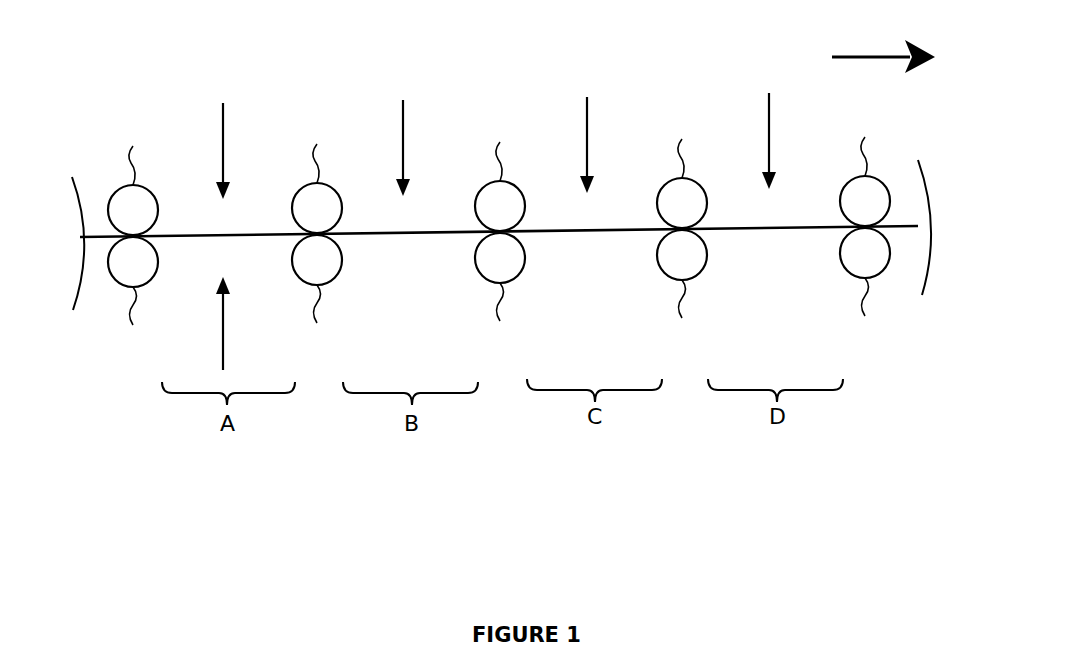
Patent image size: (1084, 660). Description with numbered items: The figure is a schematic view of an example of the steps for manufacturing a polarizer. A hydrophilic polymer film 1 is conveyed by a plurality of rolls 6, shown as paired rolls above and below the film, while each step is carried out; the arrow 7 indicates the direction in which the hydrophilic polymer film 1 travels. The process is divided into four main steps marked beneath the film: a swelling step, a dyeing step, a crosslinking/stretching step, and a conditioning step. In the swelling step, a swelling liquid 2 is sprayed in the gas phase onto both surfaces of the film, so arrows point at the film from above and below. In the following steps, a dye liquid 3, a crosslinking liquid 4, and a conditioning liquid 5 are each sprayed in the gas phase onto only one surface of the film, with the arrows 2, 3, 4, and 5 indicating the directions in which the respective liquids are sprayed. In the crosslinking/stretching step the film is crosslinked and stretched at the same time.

The hydrophilic polymer film 1 is at (213, 237).
The swelling liquid 2 is at (223, 145).
The dye liquid 3 is at (403, 142).
The crosslinking liquid 4 is at (587, 139).
The conditioning liquid 5 is at (769, 136).
The rolls 6 is at (499, 231).
The arrow 7 is at (848, 52).